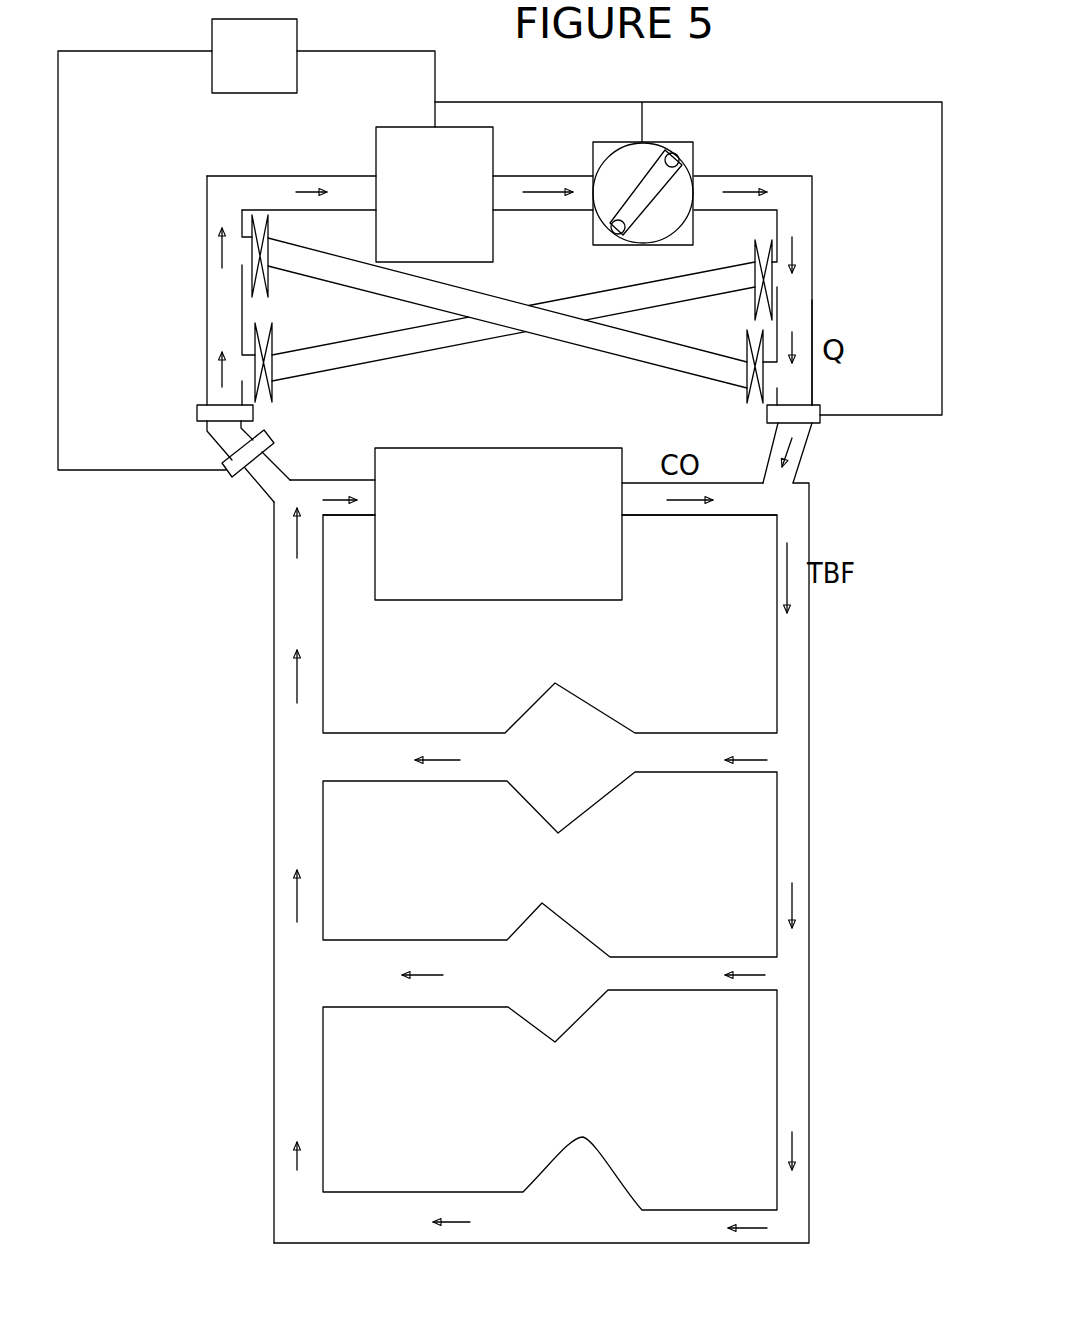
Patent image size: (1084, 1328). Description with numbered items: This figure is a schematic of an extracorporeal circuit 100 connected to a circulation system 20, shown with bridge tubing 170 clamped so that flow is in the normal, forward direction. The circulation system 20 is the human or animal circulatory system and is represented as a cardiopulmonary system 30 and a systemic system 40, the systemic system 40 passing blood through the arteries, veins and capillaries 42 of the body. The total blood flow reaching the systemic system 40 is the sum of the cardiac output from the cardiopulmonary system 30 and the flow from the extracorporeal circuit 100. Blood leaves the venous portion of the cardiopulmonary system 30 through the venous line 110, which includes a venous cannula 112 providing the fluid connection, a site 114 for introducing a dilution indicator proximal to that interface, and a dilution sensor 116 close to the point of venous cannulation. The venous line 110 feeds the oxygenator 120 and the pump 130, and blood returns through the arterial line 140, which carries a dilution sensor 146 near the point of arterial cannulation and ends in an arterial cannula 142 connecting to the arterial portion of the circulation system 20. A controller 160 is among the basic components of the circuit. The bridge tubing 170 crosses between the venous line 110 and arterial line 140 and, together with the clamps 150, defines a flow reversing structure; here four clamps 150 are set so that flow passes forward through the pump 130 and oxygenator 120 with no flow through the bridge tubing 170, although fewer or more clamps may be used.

The circulation system 20 is at (260, 723).
The cardiopulmonary system 30 is at (498, 535).
The systemic system 40 is at (810, 858).
The capillaries 42 is at (560, 767).
The extracorporeal circuit 100 is at (815, 220).
The venous line 110 is at (207, 327).
The venous cannula 112 is at (267, 491).
The site for introduction of the dilution indicator 114 is at (198, 403).
The dilution sensor 116 is at (221, 455).
The oxygenator 120 is at (450, 204).
The pump 130 is at (645, 247).
The arterial line 140 is at (813, 310).
The arterial cannula 142 is at (797, 479).
The dilution sensor 146 is at (822, 405).
The clamps 150 is at (270, 286).
The controller 160 is at (270, 58).
The bridge tubing 170 is at (648, 362).